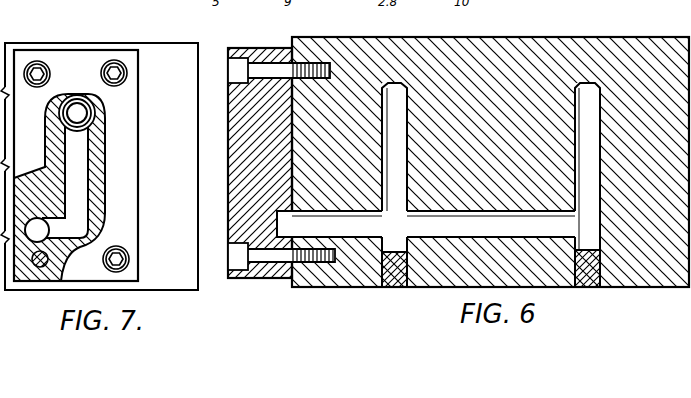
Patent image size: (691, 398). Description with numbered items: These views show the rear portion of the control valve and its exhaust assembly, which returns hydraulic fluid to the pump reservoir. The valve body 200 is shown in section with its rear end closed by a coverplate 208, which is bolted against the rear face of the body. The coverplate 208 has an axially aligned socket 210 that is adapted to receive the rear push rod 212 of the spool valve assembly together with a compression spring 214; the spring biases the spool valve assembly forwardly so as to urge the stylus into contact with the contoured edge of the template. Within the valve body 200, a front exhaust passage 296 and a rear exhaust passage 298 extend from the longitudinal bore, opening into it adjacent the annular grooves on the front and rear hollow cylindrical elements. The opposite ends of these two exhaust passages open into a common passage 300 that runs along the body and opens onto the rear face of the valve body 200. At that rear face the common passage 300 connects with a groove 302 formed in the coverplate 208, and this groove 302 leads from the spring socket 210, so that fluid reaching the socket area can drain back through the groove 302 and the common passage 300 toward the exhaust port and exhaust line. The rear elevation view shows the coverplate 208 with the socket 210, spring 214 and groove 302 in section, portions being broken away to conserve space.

In FIG. 7, the valve body 200 is at (166, 55).
In FIG. 6, the valve body 200 is at (653, 48).
In FIG. 7, the coverplate 208 is at (63, 58).
In FIG. 6, the coverplate 208 is at (262, 57).
In FIG. 7, the socket 210 is at (96, 106).
In FIG. 7, the rear push rod 212 is at (73, 104).
In FIG. 7, the compression spring 214 is at (97, 118).
In FIG. 6, the front exhaust passage 296 is at (587, 90).
In FIG. 6, the rear exhaust passage 298 is at (393, 90).
In FIG. 7, the common passage 300 is at (40, 235).
In FIG. 6, the common passage 300 is at (363, 232).
In FIG. 7, the groove 302 is at (87, 200).
In FIG. 6, the groove 302 is at (287, 232).